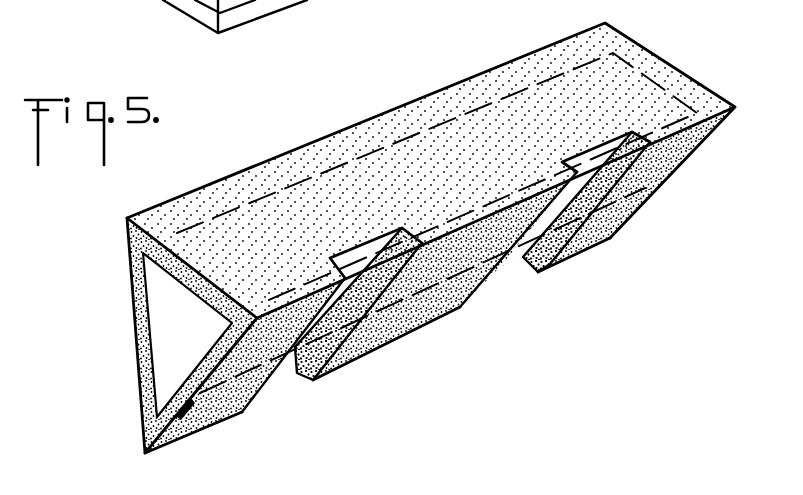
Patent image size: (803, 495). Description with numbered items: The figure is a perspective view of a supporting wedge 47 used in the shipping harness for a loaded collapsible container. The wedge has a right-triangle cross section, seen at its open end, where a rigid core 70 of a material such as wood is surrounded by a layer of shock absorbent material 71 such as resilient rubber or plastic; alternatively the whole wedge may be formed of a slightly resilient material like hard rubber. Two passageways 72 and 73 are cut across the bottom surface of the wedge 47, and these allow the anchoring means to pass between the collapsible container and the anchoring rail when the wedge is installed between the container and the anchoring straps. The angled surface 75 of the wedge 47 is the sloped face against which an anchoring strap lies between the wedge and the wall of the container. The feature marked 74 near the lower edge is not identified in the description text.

The supporting wedge 47 is at (318, 150).
The core 70 is at (162, 305).
The shock absorbent material 71 is at (130, 259).
The passageway 72 is at (364, 252).
The passageway 73 is at (600, 147).
The bottom edge tang 74 is at (196, 396).
The angled surface 75 is at (140, 377).